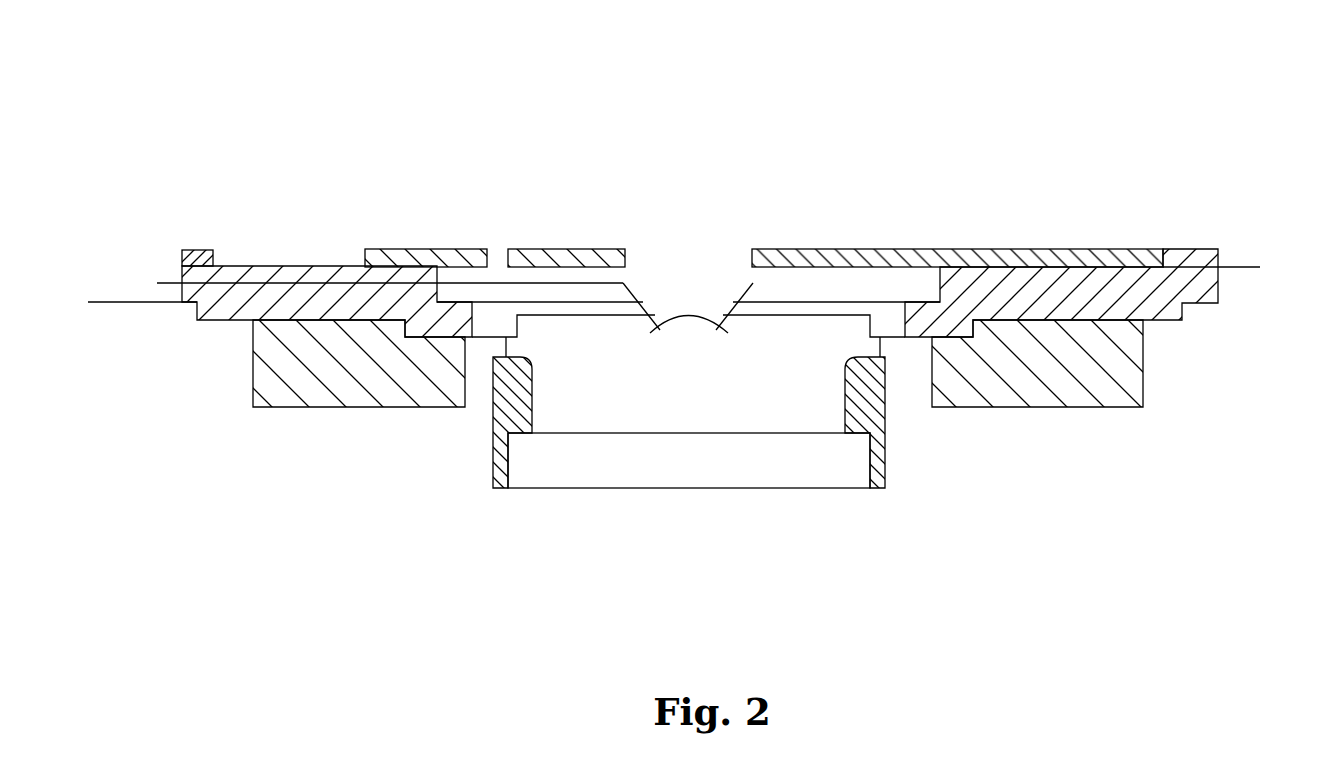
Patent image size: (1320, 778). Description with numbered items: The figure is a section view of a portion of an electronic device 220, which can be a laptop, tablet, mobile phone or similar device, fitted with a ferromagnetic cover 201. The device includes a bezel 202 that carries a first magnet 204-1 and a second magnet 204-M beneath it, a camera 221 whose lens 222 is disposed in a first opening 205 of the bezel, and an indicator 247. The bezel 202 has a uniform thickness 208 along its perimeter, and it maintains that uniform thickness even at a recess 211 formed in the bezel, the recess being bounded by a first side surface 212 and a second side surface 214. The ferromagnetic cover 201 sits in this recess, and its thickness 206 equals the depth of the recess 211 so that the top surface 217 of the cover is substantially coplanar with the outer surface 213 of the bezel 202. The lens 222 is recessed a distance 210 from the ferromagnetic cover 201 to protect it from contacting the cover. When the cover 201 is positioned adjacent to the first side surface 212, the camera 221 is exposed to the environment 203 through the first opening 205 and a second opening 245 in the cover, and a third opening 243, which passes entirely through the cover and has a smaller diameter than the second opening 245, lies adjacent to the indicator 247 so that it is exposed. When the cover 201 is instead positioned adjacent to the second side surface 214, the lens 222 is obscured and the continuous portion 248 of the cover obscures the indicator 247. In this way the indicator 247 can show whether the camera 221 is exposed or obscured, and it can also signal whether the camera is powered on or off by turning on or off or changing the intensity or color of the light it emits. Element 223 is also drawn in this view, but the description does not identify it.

The ferromagnetic cover 201 is at (993, 249).
The bezel 202 is at (285, 263).
The environment 203 is at (717, 70).
The first magnet 204-1 is at (358, 408).
The second magnet 204-M is at (1072, 408).
The first opening 205 is at (796, 288).
The thickness of the ferromagnetic cover 206 is at (1218, 249).
The thickness of the bezel 208 is at (182, 250).
The distance 210 is at (182, 266).
The recess 211 is at (326, 252).
The first side surface 212 is at (1165, 258).
The outer surface of the bezel 213 is at (192, 250).
The second side surface 214 is at (217, 257).
The top surface of the ferromagnetic cover 217 is at (785, 249).
The electronic device 220 is at (388, 75).
The camera 221 is at (807, 495).
The lens 222 is at (682, 318).
The top electrode layer 223 is at (858, 249).
The third opening 243 is at (492, 249).
The second opening 245 is at (682, 250).
The indicator 247 is at (563, 322).
The continuous portion 248 is at (1027, 250).